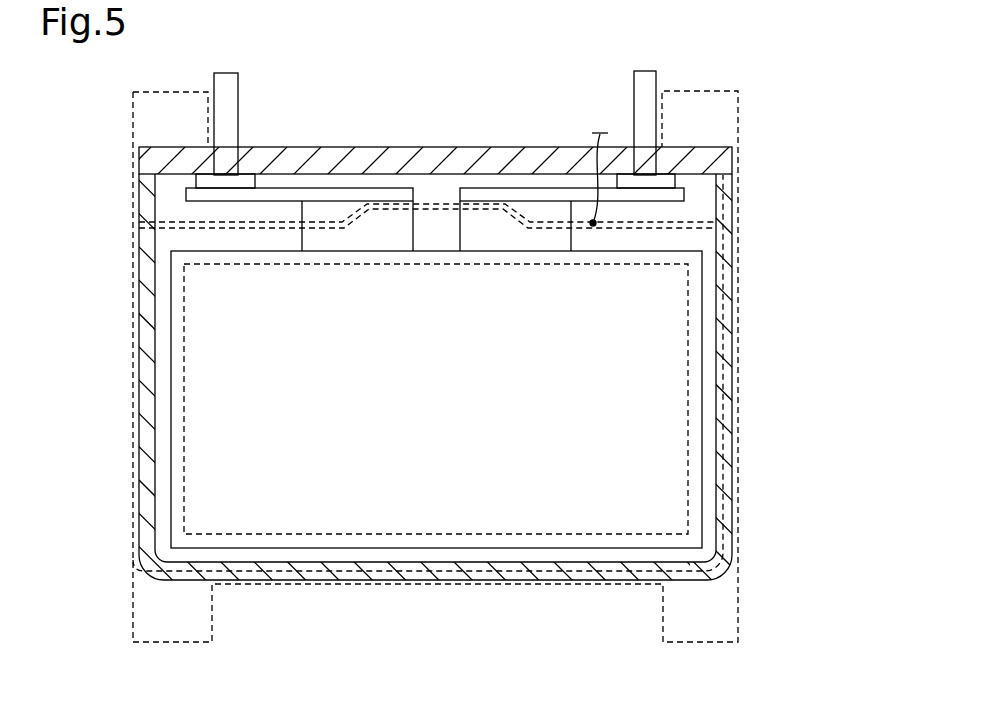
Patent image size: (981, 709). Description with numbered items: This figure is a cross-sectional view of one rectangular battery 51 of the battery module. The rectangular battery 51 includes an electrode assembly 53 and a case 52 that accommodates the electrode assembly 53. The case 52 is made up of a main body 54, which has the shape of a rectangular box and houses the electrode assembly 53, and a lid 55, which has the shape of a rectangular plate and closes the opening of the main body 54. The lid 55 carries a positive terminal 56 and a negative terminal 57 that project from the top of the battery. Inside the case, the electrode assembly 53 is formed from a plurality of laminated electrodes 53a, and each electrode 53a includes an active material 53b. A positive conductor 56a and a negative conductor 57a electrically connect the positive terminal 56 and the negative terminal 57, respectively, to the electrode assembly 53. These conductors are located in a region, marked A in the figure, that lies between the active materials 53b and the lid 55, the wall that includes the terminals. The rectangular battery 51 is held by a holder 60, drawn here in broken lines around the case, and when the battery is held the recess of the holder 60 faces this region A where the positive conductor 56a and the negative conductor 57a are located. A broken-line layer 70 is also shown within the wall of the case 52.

The rectangular battery 51 is at (770, 94).
The case 52 is at (86, 153).
The electrode assembly 53 is at (700, 493).
The electrode 53a is at (670, 374).
The active material 53b is at (690, 397).
The main body 54 is at (139, 205).
The lid 55 is at (139, 162).
The positive terminal 56 is at (227, 76).
The positive conductor 56a is at (338, 195).
The negative terminal 57 is at (647, 77).
The negative conductor 57a is at (522, 195).
The holder 60 is at (737, 155).
The insulating layer 70 is at (723, 270).